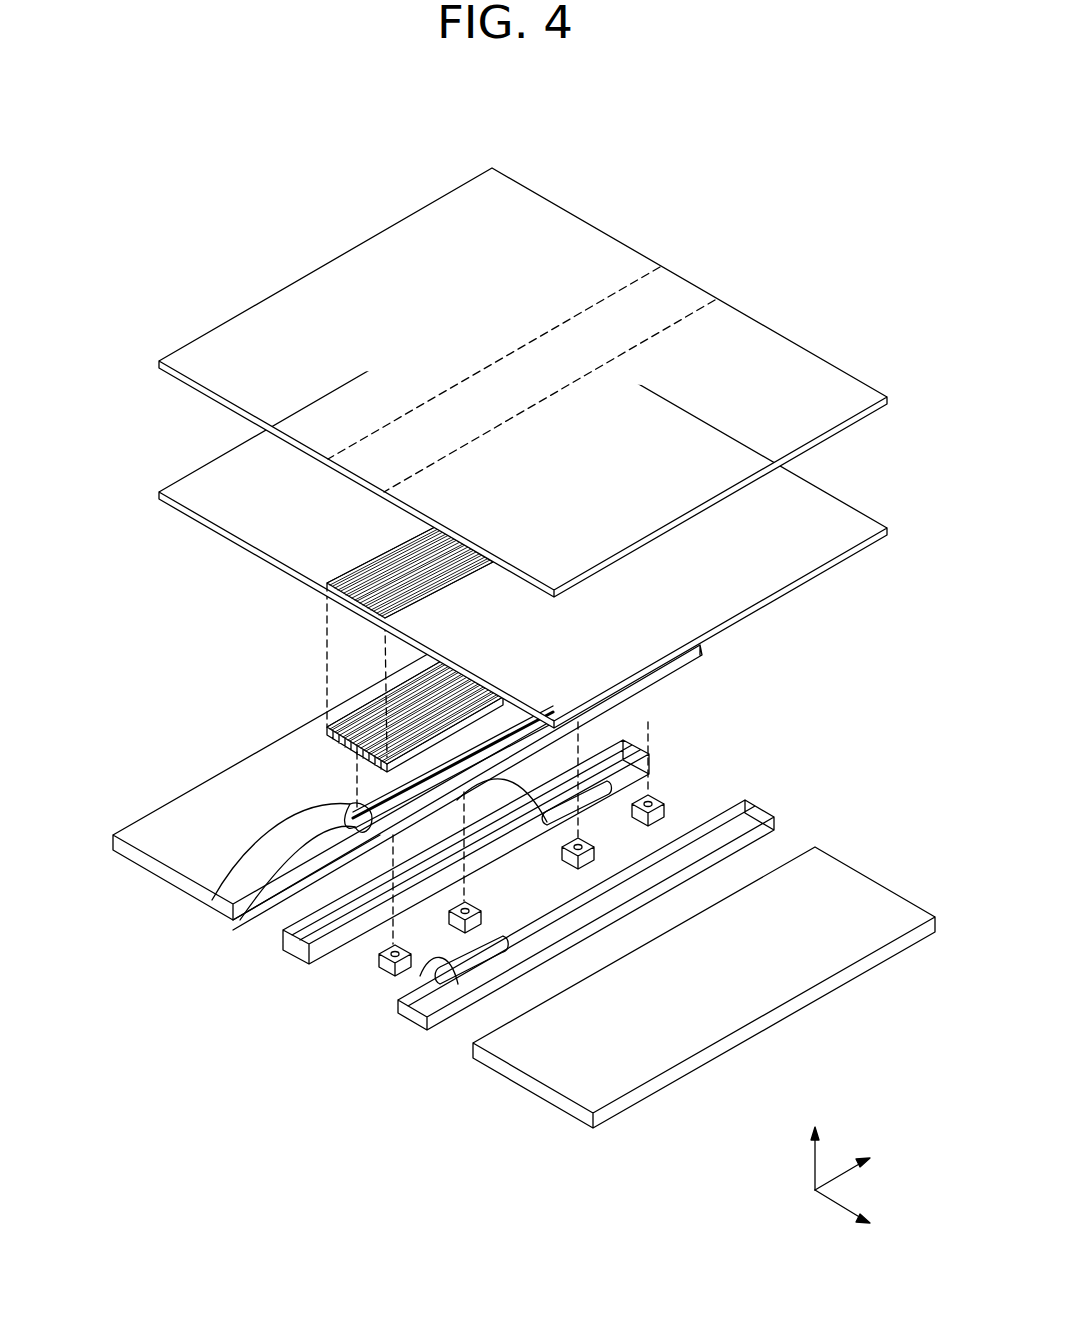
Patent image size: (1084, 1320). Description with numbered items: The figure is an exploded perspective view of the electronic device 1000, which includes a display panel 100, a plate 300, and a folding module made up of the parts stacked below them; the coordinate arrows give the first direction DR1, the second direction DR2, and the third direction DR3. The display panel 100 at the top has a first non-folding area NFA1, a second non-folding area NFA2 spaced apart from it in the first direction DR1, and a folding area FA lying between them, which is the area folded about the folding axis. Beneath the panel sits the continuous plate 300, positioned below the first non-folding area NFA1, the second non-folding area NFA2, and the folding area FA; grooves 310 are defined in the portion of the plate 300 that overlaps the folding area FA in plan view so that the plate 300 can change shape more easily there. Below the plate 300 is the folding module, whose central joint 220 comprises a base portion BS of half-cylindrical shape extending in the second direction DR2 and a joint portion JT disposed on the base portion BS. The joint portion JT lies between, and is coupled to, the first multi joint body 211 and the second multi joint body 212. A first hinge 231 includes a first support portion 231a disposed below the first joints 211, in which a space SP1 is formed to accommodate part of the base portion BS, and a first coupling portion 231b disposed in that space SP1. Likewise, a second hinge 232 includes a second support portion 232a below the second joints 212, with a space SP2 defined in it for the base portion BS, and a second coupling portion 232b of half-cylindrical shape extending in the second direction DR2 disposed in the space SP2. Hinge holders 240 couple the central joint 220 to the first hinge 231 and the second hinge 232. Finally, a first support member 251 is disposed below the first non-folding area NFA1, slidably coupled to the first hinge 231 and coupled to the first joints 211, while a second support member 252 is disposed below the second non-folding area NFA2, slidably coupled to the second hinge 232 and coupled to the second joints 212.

The electronic device 1000 is at (728, 165).
The display panel 100 is at (481, 373).
The plate 300 is at (481, 513).
The grooves 310 is at (336, 582).
The first non-folding area NFA1 is at (790, 356).
The second non-folding area NFA2 is at (561, 220).
The folding area FA is at (680, 290).
The second multi joint body 212 is at (325, 722).
The first multi joint body 211 is at (340, 753).
The second support member 252 is at (152, 867).
The joint portion JT is at (224, 902).
The base portion BS is at (236, 911).
The central joint 220 is at (182, 929).
The second hinge 232 is at (402, 875).
The second support portion 232a is at (306, 950).
The second coupling portion 232b is at (290, 940).
The hinge holder 240 is at (386, 966).
The first hinge 231 is at (522, 942).
The first support portion 231a is at (422, 1016).
The first coupling portion 231b is at (400, 1006).
The first support member 251 is at (537, 1084).
The space SP1 is at (718, 831).
The space SP2 is at (627, 768).
The first direction DR1 is at (863, 1215).
The second direction DR2 is at (863, 1169).
The third direction DR3 is at (814, 1146).